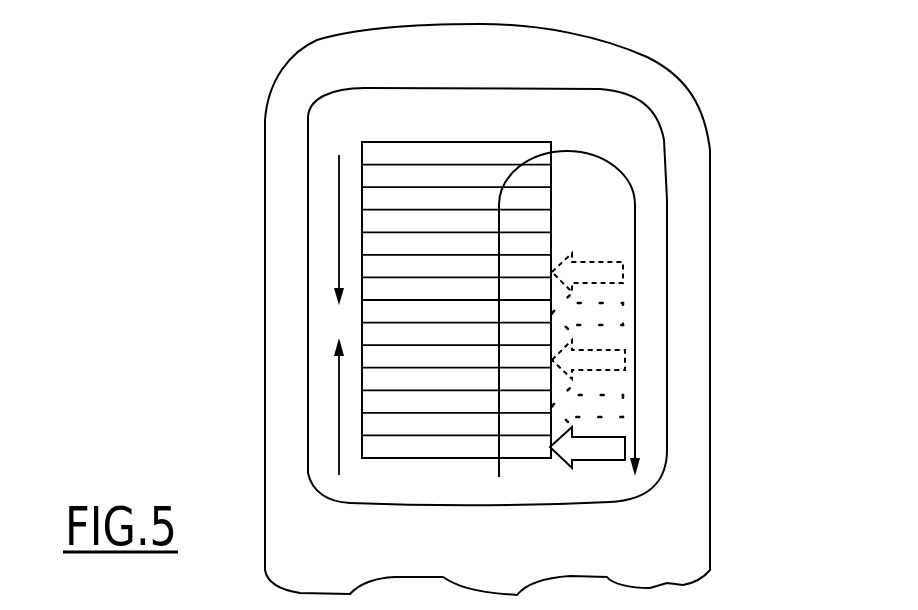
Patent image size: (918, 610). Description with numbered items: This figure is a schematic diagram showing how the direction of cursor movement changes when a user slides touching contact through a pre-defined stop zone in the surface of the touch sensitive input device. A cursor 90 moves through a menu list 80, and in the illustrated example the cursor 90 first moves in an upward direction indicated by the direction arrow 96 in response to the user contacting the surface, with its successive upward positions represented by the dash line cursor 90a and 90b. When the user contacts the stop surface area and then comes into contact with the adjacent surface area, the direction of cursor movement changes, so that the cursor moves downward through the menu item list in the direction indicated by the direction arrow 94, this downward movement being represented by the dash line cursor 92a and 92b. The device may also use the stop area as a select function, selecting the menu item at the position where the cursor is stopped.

The menu list 80 is at (500, 130).
The cursor 90 is at (610, 447).
The dash line cursor 90a is at (607, 365).
The dash line cursor 90b is at (607, 258).
The dash line cursor 92a is at (615, 313).
The dash line cursor 92b is at (615, 400).
The direction arrow 94 is at (339, 222).
The direction arrow 96 is at (339, 415).